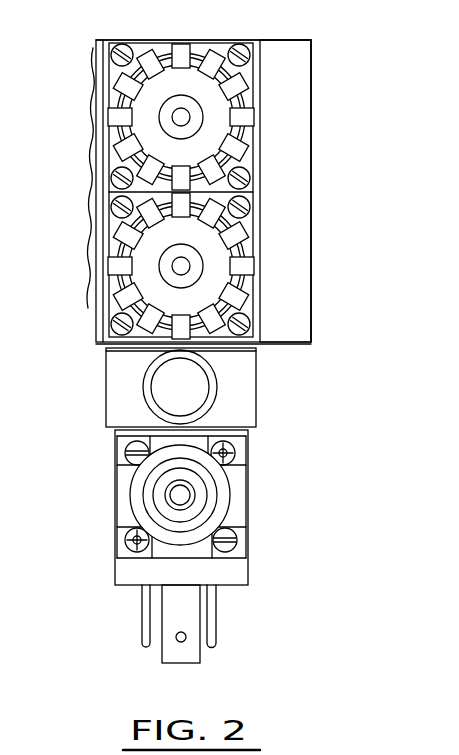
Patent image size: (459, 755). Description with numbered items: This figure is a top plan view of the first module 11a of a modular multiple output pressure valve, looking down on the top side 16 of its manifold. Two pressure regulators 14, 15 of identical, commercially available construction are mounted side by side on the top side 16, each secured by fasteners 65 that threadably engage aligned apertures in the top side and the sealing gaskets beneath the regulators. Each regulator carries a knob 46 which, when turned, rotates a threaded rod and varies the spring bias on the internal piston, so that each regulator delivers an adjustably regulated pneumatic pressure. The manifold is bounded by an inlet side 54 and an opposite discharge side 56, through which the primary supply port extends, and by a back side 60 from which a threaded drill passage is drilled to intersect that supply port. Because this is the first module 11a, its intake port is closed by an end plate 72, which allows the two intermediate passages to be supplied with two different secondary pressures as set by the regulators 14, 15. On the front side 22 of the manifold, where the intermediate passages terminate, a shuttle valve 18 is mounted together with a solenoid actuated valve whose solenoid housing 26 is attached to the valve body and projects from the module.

The first module 11a is at (258, 33).
The back side 60 is at (130, 40).
The discharge side 56 is at (98, 218).
The inlet side 54 is at (262, 154).
The end plate 72 is at (303, 188).
The top side 16 is at (261, 49).
The pressure regulator 14 is at (247, 137).
The pressure regulator 15 is at (248, 242).
The knob 46 is at (113, 118).
The fastener 65 is at (115, 54).
The front side 22 is at (257, 347).
The shuttle valve 18 is at (110, 383).
The solenoid housing 26 is at (240, 502).